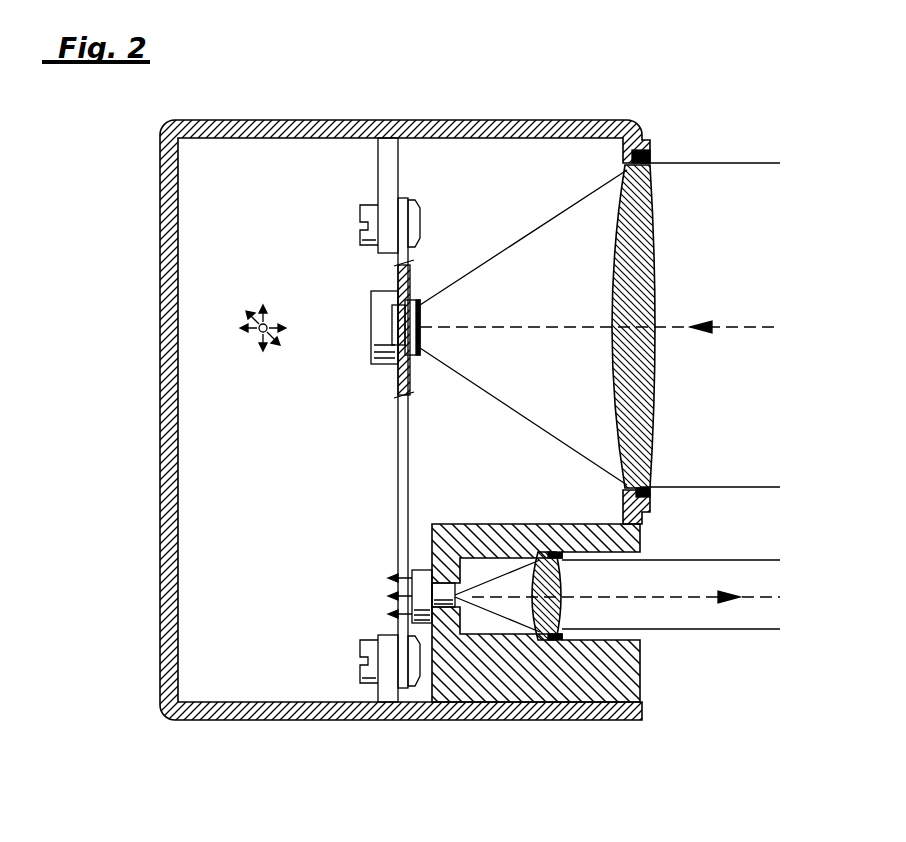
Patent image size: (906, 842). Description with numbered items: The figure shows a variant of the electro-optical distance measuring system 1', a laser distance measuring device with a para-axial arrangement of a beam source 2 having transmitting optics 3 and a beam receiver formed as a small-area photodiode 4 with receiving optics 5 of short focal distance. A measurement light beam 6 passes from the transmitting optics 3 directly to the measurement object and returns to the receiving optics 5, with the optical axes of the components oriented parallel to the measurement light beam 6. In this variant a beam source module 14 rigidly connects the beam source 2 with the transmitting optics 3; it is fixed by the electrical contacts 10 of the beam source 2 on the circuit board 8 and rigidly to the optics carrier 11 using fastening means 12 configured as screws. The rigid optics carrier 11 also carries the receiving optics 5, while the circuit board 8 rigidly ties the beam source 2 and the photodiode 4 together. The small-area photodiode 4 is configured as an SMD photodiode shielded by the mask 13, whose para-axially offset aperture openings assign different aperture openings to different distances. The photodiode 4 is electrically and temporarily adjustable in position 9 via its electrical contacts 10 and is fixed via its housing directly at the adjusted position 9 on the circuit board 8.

The distance measuring system 1' is at (119, 408).
The beam source 2 is at (412, 596).
The transmitting optics 3 is at (557, 578).
The small-area photodiode 4 is at (375, 300).
The receiving optics 5 is at (650, 258).
The measurement light beam 6 is at (720, 333).
The circuit board 8 is at (408, 475).
The position 9 is at (268, 318).
The electrical contacts 10 is at (398, 370).
The optics carrier 11 is at (240, 718).
The fastening means 12 is at (360, 210).
The mask 13 is at (425, 298).
The beam source module 14 is at (547, 682).